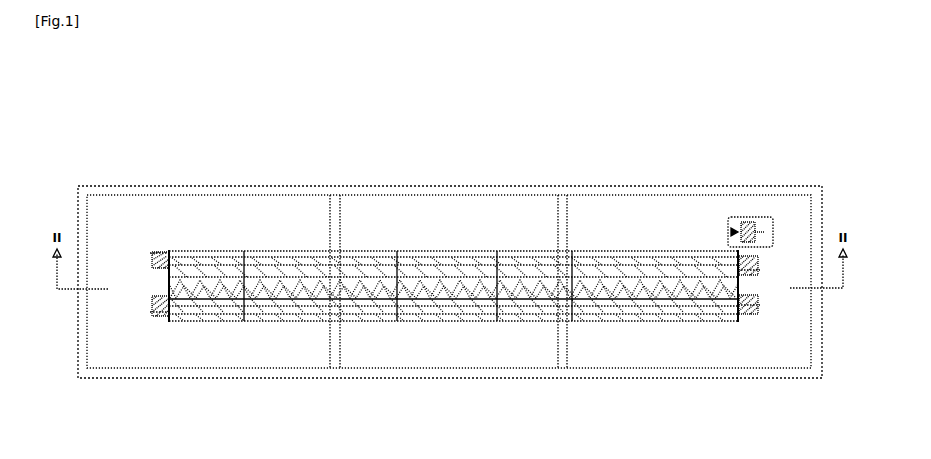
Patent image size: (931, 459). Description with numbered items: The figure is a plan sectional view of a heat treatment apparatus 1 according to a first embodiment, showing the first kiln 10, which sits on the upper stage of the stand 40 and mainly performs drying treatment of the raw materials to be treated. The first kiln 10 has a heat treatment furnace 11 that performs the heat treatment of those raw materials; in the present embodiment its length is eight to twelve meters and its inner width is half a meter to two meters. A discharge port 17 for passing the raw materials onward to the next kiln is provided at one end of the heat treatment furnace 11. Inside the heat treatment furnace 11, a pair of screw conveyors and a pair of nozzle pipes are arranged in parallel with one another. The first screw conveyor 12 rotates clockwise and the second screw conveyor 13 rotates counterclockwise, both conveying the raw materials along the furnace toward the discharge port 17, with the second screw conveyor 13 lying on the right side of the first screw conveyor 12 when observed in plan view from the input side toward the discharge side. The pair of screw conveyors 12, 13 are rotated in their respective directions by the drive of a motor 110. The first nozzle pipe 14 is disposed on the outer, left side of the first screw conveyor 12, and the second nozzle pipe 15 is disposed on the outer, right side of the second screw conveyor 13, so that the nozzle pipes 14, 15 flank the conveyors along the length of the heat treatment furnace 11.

The heat treatment apparatus 1 is at (608, 142).
The first kiln 10 is at (414, 252).
The heat treatment furnace 11 is at (485, 252).
The first screw conveyor 12 is at (265, 250).
The second screw conveyor 13 is at (282, 322).
The first nozzle pipe 14 is at (296, 250).
The second nozzle pipe 15 is at (310, 322).
The discharge port 17 is at (692, 252).
The stand 40 is at (175, 186).
The motor 110 is at (750, 220).